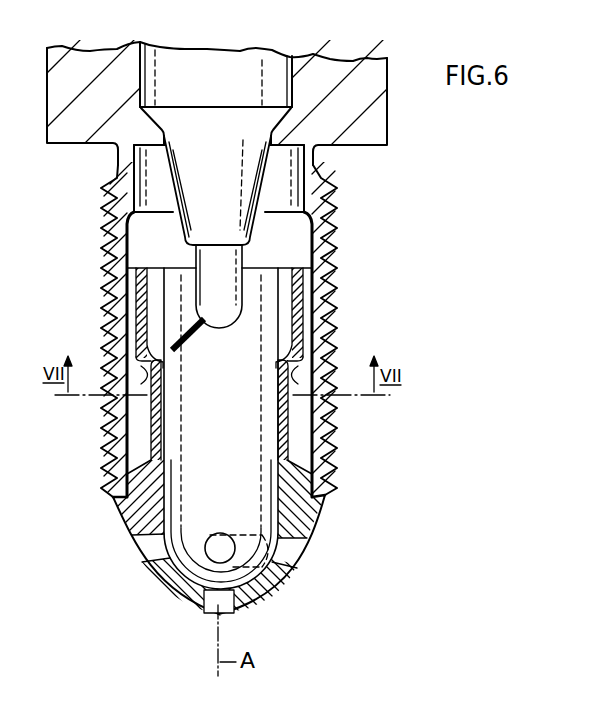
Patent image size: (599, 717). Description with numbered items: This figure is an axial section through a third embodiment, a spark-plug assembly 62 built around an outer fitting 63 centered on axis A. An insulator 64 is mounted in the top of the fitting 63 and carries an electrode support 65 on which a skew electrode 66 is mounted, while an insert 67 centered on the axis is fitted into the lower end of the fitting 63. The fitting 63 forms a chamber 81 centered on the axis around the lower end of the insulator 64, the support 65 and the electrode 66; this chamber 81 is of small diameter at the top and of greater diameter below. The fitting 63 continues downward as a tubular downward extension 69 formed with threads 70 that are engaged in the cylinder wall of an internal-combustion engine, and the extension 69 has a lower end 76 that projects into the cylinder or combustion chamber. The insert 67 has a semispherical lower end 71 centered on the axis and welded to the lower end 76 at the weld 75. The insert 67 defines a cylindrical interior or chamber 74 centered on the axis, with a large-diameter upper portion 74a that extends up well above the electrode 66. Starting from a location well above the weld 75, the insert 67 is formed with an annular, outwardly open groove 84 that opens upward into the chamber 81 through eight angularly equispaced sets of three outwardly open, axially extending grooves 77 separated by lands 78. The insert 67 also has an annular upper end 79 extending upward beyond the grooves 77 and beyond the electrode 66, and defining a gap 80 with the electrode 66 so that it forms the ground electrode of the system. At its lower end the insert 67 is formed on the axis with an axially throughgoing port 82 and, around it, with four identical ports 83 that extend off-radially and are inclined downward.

The spark-plug assembly 62 is at (437, 243).
The outer fitting 63 is at (373, 98).
The insulator 64 is at (262, 60).
The electrode support 65 is at (228, 310).
The skew electrode 66 is at (177, 335).
The insert 67 is at (290, 442).
The tubular downward extension 69 is at (315, 175).
The threads 70 is at (316, 263).
The semispherical lower end 71 is at (276, 600).
The cylindrical chamber 74 is at (178, 483).
The large-diameter upper portion 74a is at (147, 316).
The weld 75 is at (330, 502).
The lower end 76 is at (332, 496).
The axially extending grooves 77 is at (312, 328).
The lands 78 is at (312, 268).
The annular upper end 79 is at (160, 390).
The gap 80 is at (148, 350).
The chamber 81 is at (290, 226).
The axially throughgoing port 82 is at (217, 607).
The ports 83 is at (143, 547).
The annular outwardly open groove 84 is at (300, 408).